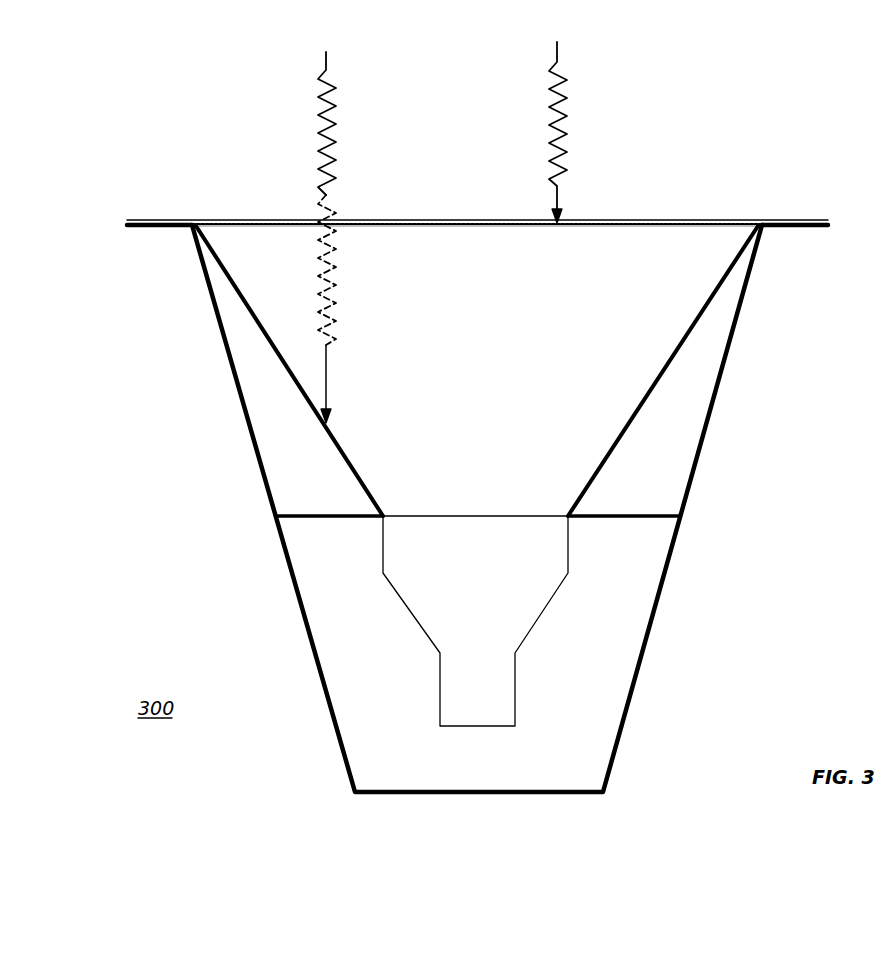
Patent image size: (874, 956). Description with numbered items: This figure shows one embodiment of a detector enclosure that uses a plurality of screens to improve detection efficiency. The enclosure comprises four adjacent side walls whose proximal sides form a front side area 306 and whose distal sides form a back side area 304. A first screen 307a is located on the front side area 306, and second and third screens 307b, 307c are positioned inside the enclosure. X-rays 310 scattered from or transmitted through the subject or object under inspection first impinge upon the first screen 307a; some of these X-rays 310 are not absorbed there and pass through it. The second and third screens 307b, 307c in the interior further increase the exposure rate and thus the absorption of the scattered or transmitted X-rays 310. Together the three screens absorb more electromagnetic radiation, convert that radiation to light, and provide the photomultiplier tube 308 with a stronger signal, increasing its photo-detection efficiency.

The back side area 304 is at (518, 799).
The front side area 306 is at (655, 218).
The first screen 307a is at (728, 222).
The second screen 307b is at (300, 390).
The third screen 307c is at (640, 410).
The photomultiplier tube 308 is at (568, 553).
The X-rays scattered from or transmitted through the subject or object under inspect 310 is at (442, 222).